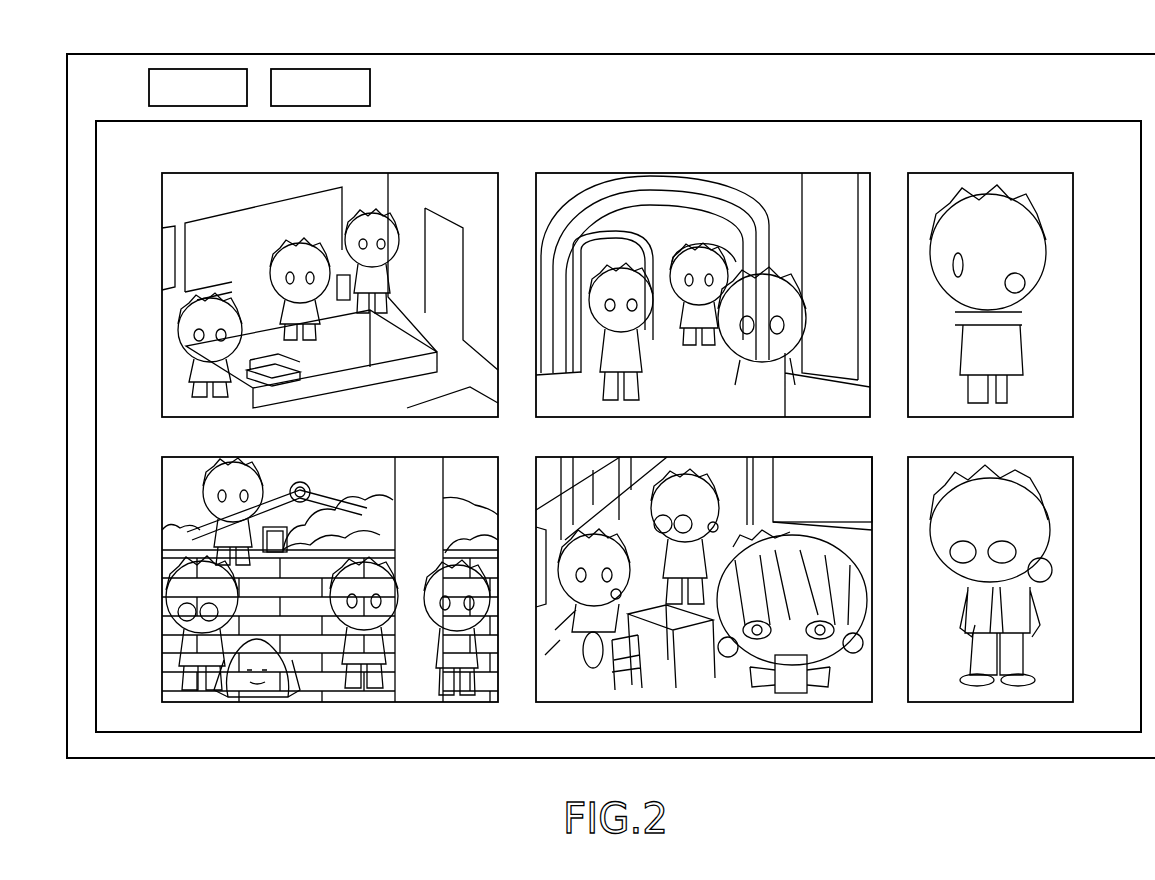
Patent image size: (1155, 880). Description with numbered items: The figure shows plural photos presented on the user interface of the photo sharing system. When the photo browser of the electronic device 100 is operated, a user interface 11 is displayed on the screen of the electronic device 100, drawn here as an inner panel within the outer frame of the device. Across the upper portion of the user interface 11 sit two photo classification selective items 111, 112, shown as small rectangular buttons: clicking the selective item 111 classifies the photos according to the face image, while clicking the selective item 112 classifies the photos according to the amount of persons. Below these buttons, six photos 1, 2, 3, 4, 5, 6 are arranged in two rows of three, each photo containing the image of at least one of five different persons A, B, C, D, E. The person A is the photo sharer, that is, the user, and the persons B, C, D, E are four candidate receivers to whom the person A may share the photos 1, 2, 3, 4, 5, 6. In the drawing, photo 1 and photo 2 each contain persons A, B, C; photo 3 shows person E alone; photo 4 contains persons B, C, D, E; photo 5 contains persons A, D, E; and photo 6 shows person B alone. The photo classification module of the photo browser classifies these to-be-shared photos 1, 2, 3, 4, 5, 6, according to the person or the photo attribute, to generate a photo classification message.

The electronic device 100 is at (1013, 68).
The user interface 11 is at (900, 133).
The photo classification selective item 111 is at (213, 82).
The photo classification selective item 112 is at (338, 82).
The photo 1 is at (443, 186).
The photo 2 is at (760, 185).
The photo 3 is at (1000, 185).
The photo 4 is at (357, 470).
The photo 5 is at (797, 470).
The photo 6 is at (1024, 470).
The person A is at (198, 307).
The person B is at (277, 265).
The person C is at (375, 218).
The person D is at (177, 572).
The person E is at (1030, 250).